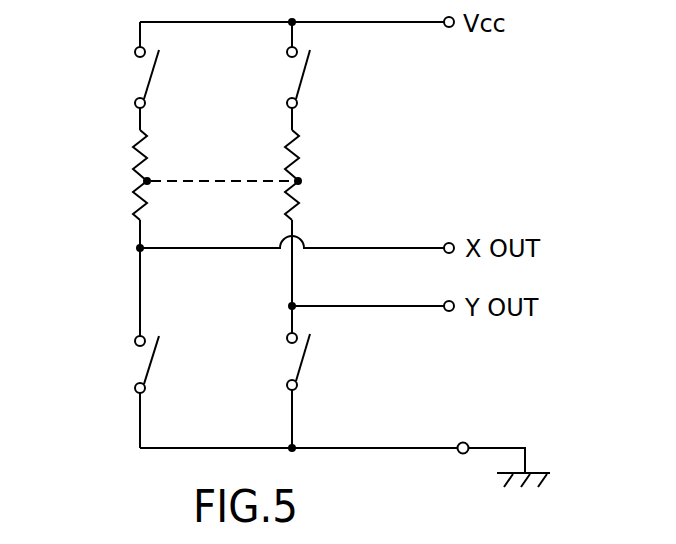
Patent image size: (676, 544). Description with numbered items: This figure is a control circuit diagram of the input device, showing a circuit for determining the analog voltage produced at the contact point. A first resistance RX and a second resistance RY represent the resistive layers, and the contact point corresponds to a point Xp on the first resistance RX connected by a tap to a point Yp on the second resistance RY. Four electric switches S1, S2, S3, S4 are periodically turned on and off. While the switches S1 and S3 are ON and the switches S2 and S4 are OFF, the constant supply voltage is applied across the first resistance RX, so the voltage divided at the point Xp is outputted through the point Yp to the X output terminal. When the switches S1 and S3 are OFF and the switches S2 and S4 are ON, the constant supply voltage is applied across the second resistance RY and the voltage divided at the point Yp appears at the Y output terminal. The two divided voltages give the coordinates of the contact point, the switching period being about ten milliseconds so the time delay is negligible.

The electric switch S1 is at (138, 79).
The electric switch S2 is at (290, 76).
The electric switch S3 is at (138, 359).
The electric switch S4 is at (290, 357).
The first resistance RX is at (133, 153).
The second resistance RY is at (288, 166).
The point Xp is at (149, 180).
The point Yp is at (300, 181).